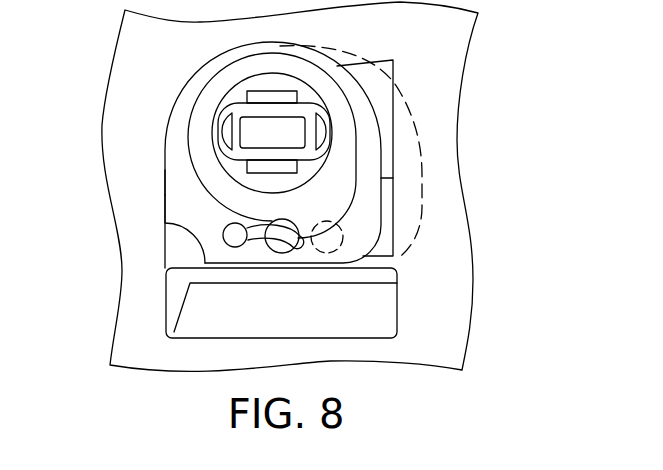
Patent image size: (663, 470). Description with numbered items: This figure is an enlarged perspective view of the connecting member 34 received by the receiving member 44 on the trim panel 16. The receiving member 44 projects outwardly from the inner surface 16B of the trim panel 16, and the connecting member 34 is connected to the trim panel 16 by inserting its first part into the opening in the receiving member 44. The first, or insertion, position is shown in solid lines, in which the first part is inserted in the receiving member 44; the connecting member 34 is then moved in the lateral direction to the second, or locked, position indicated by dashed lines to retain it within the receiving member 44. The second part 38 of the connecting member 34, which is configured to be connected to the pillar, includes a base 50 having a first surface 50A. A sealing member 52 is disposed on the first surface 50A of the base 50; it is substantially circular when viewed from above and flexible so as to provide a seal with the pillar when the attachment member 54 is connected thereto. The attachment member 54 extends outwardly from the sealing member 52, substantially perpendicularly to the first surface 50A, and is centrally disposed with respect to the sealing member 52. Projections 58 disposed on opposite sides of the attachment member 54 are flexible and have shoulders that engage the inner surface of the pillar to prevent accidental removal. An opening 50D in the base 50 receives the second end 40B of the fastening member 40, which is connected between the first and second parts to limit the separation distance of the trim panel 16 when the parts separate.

The trim panel 16 is at (479, 318).
The inner surface 16B is at (432, 51).
The connecting member 34 is at (152, 183).
The second part 38 is at (152, 208).
The fastening member 40 is at (252, 244).
The second end 40B is at (225, 244).
The receiving member 44 is at (393, 108).
The base 50 is at (164, 153).
The first surface 50A is at (195, 220).
The opening 50D is at (301, 250).
The sealing member 52 is at (188, 115).
The attachment member 54 is at (233, 88).
The projections 58 is at (270, 90).